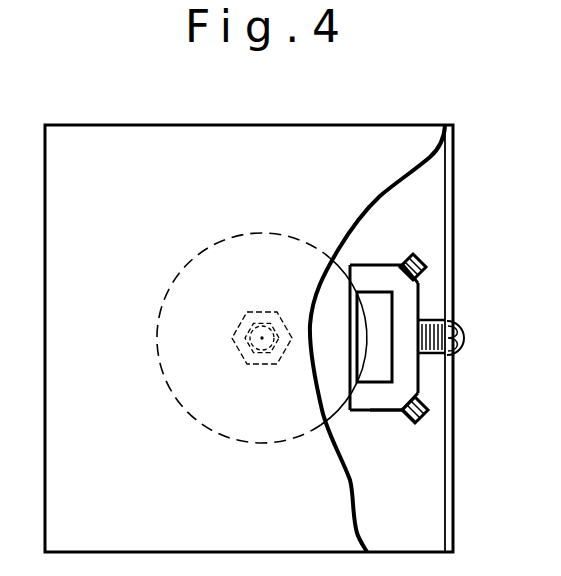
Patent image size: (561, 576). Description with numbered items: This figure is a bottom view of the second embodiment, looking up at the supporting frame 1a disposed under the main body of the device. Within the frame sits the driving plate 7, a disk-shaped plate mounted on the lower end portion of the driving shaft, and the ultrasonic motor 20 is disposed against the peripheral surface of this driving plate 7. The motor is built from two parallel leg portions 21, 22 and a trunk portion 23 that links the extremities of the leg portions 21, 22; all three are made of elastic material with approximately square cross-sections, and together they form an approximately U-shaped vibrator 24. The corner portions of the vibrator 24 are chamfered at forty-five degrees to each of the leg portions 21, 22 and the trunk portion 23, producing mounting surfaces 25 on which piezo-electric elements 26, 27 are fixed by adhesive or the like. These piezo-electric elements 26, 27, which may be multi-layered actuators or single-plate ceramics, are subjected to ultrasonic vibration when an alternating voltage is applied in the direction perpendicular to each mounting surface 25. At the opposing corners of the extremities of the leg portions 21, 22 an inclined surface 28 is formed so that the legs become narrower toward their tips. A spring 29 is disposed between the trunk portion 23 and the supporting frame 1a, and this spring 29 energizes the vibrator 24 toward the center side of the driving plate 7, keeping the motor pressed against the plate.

The supporting frame 1a is at (455, 166).
The driving plate 7 is at (328, 382).
The ultrasonic motor 20 is at (419, 363).
The leg portion 21 is at (358, 412).
The leg portion 22 is at (372, 277).
The trunk portion 23 is at (400, 370).
The vibrator 24 is at (385, 426).
The mounting surface 25 is at (450, 356).
The piezo-electric element 26 is at (428, 416).
The piezo-electric element 27 is at (424, 262).
The inclined surface 28 is at (353, 290).
The spring 29 is at (435, 356).